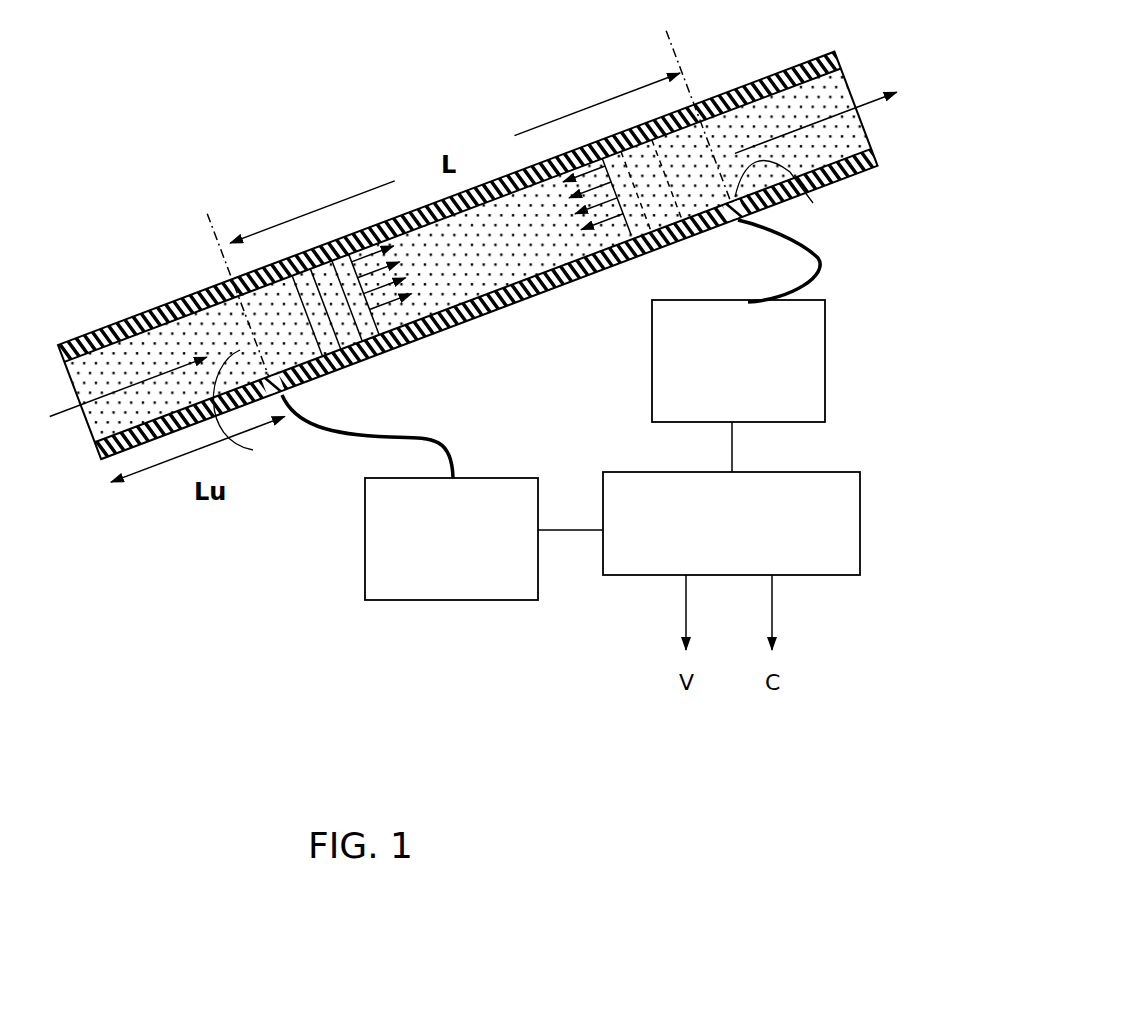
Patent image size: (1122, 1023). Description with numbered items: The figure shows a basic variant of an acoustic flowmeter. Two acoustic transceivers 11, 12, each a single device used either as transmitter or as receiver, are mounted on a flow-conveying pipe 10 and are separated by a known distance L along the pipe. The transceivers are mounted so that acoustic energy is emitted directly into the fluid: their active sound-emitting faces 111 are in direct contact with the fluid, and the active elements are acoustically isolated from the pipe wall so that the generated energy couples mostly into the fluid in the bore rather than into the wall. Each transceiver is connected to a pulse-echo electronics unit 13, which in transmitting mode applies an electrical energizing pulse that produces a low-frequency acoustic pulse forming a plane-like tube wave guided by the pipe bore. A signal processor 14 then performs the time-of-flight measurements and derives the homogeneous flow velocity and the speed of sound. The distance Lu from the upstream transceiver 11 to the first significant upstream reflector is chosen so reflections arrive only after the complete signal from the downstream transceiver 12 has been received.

The flow-conveying pipe 10 is at (183, 301).
The upstream acoustic transceiver 11 is at (284, 388).
The downstream acoustic transceiver 12 is at (718, 217).
The pulse-echo electronics unit 13 is at (652, 362).
The signal processor 14 is at (622, 568).
The active sound-emitting face 111 is at (530, 311).